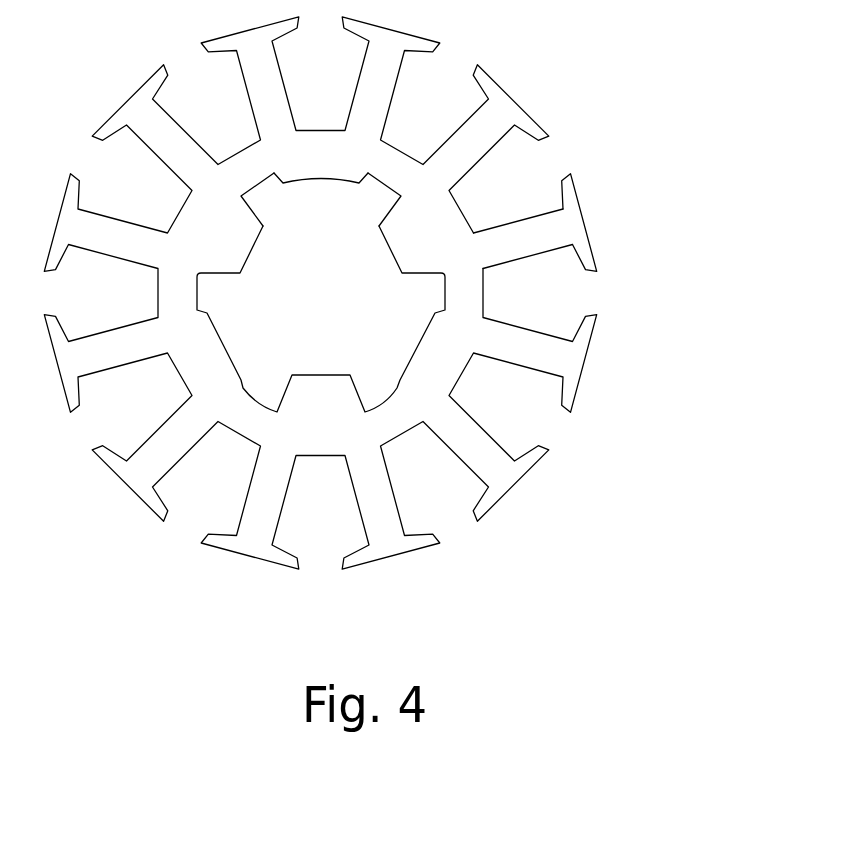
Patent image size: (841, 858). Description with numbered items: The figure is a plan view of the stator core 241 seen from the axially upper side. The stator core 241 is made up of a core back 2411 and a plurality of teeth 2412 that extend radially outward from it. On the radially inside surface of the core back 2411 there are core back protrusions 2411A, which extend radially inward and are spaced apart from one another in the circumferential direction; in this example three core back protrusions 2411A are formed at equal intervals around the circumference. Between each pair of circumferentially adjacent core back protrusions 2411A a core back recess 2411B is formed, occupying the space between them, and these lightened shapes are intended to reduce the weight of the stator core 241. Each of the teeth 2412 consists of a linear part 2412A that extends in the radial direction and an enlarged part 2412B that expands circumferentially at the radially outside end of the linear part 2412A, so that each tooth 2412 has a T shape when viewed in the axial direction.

The stator core 241 is at (371, 289).
The core back 2411 is at (429, 271).
The core back protrusion 2411A is at (387, 248).
The core back recess 2411B is at (307, 205).
The teeth 2412 is at (586, 246).
The linear part 2412A is at (550, 248).
The enlarged part 2412B is at (593, 247).